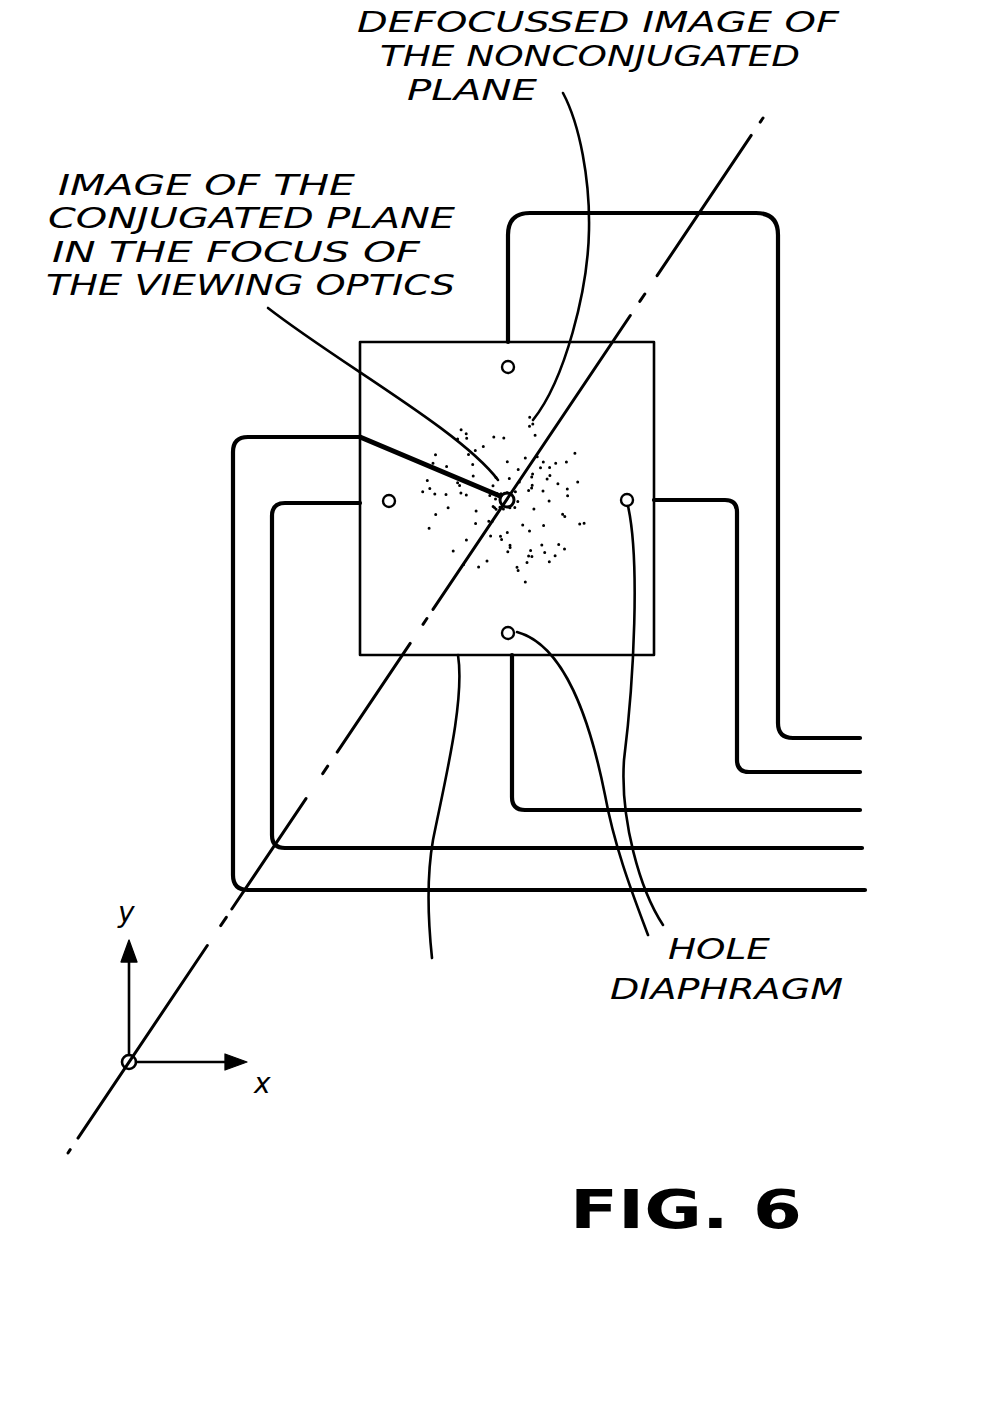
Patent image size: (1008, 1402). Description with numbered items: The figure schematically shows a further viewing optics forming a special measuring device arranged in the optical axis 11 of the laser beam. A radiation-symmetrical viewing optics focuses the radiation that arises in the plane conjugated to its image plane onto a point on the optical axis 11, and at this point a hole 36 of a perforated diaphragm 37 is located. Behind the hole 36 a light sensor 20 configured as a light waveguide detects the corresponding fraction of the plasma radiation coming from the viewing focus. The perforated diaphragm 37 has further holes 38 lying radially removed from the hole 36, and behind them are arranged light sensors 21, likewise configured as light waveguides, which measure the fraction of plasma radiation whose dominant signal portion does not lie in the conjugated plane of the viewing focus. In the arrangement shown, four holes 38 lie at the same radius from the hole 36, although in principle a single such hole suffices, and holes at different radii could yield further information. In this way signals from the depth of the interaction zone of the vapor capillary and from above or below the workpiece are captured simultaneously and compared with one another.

The optical axis 11 is at (103, 1102).
The light sensor 20 is at (574, 669).
The light sensors 21 is at (595, 536).
The hole 36 is at (515, 496).
The perforated diaphragm 37 is at (445, 855).
The holes 38 is at (513, 361).